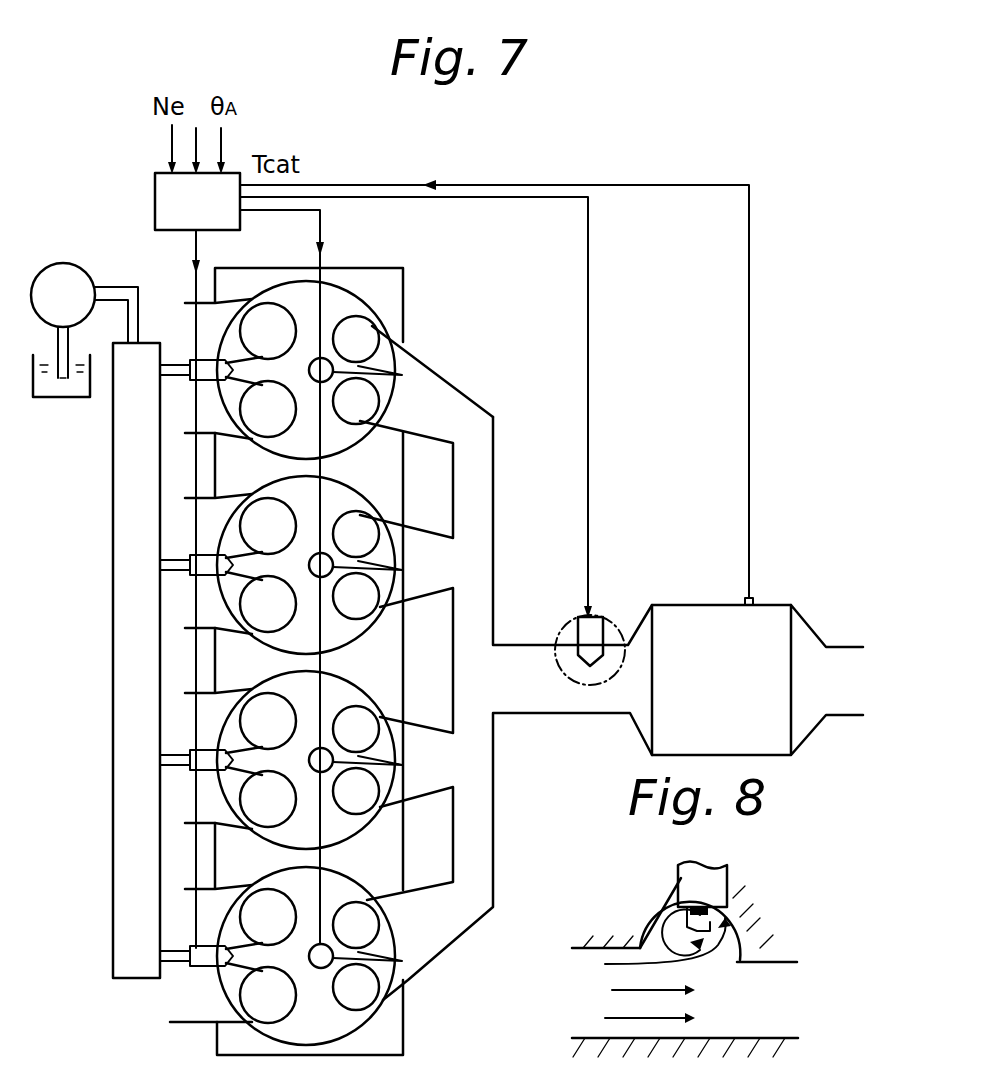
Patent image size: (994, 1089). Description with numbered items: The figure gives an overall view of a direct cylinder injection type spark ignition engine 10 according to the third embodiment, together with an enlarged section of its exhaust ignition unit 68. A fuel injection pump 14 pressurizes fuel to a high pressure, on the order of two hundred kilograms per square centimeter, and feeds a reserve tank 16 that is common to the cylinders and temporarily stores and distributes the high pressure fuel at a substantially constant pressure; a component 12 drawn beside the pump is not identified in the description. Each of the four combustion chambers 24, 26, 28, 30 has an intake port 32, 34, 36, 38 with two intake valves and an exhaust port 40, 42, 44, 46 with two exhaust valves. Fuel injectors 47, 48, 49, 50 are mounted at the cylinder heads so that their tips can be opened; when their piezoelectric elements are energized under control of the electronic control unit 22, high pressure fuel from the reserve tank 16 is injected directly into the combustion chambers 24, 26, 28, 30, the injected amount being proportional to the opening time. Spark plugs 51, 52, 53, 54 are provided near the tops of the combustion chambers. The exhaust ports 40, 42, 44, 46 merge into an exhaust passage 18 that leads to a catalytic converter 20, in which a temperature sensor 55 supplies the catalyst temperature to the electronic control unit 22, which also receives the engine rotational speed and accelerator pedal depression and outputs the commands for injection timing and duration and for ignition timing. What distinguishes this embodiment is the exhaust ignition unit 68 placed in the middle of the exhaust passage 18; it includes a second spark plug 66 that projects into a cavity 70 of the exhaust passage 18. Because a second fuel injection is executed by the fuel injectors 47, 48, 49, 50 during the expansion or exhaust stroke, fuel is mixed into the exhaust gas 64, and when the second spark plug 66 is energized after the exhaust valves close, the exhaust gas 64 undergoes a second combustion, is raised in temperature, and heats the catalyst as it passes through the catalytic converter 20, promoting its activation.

In FIG. 7, the internal combustion engine 10 is at (405, 308).
In FIG. 7, the fuel tank 12 is at (60, 397).
In FIG. 7, the fuel injection pump 14 is at (72, 277).
In FIG. 7, the reserve tank 16 is at (113, 599).
In FIG. 7, the exhaust passage 18 is at (540, 705).
In FIG. 8, the exhaust passage 18 is at (782, 962).
In FIG. 7, the catalytic converter 20 is at (697, 615).
In FIG. 7, the electronic control unit 22 is at (157, 199).
In FIG. 7, the combustion chamber 24 is at (346, 303).
In FIG. 7, the combustion chamber 26 is at (348, 507).
In FIG. 7, the combustion chamber 28 is at (352, 700).
In FIG. 7, the combustion chamber 30 is at (350, 893).
In FIG. 7, the intake port 32 is at (227, 310).
In FIG. 7, the intake port 34 is at (237, 510).
In FIG. 7, the intake port 36 is at (235, 702).
In FIG. 7, the intake port 38 is at (236, 902).
In FIG. 7, the exhaust port 40 is at (447, 390).
In FIG. 7, the exhaust port 42 is at (424, 545).
In FIG. 7, the exhaust port 44 is at (430, 737).
In FIG. 7, the exhaust port 46 is at (438, 895).
In FIG. 7, the fuel injector 47 is at (212, 377).
In FIG. 7, the fuel injector 48 is at (210, 573).
In FIG. 7, the fuel injector 49 is at (213, 768).
In FIG. 7, the fuel injector 50 is at (208, 967).
In FIG. 7, the spark plug 51 is at (311, 381).
In FIG. 7, the spark plug 52 is at (309, 578).
In FIG. 7, the spark plug 53 is at (311, 775).
In FIG. 7, the spark plug 54 is at (324, 968).
In FIG. 7, the temperature sensor 55 is at (754, 597).
In FIG. 8, the exhaust gas 64 is at (631, 1000).
In FIG. 7, the second spark plug 66 is at (595, 622).
In FIG. 8, the second spark plug 66 is at (727, 877).
In FIG. 7, the exhaust ignition unit 68 is at (567, 628).
In FIG. 8, the exhaust ignition unit 68 is at (617, 905).
In FIG. 8, the cavity 70 is at (650, 903).